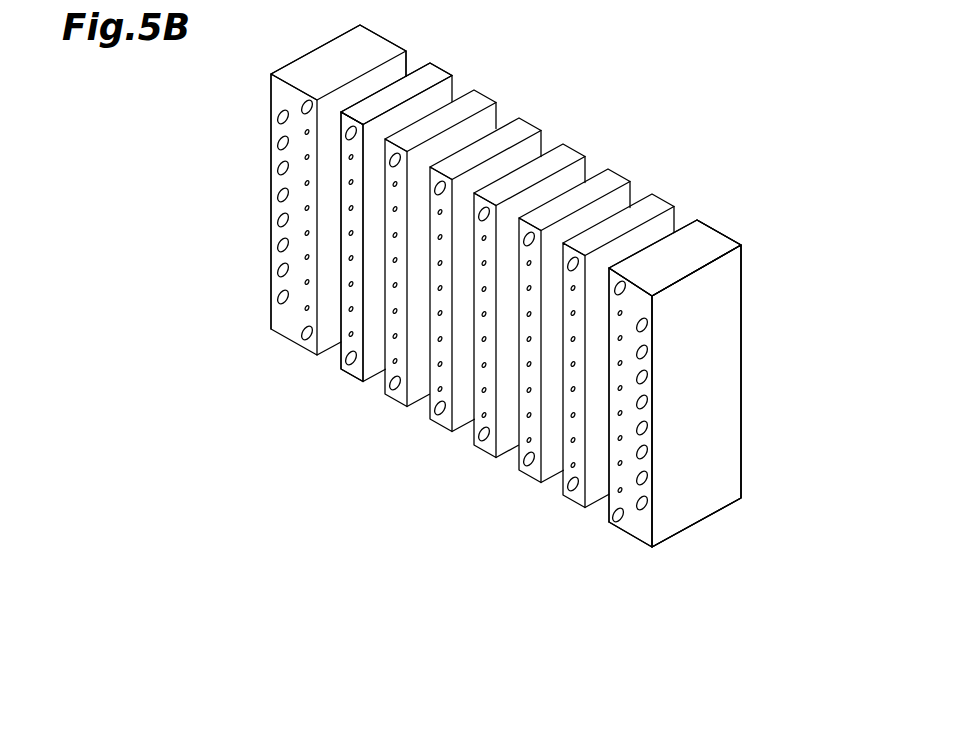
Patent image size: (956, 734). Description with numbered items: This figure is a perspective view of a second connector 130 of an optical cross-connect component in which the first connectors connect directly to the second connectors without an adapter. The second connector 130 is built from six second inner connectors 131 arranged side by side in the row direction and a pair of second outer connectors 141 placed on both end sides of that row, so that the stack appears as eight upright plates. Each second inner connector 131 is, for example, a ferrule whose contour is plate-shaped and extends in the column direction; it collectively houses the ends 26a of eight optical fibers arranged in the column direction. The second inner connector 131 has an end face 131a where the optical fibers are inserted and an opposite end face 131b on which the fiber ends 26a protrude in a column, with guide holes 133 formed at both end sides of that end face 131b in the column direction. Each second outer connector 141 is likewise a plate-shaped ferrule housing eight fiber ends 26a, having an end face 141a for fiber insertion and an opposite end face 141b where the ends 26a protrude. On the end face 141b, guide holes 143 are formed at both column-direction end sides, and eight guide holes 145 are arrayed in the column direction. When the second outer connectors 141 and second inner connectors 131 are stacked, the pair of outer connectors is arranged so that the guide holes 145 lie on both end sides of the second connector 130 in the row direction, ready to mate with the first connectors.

The second connector 130 is at (688, 127).
The second inner connector 131 is at (658, 203).
The end face 131a is at (422, 62).
The end face 131b is at (343, 149).
The guide hole 133 is at (350, 135).
The end of optical fiber 26a is at (348, 157).
The second outer connector 141 is at (378, 48).
The end face 141a is at (742, 246).
The end face 141b is at (653, 312).
The guide hole 143 is at (642, 288).
The guide hole 145 is at (653, 334).